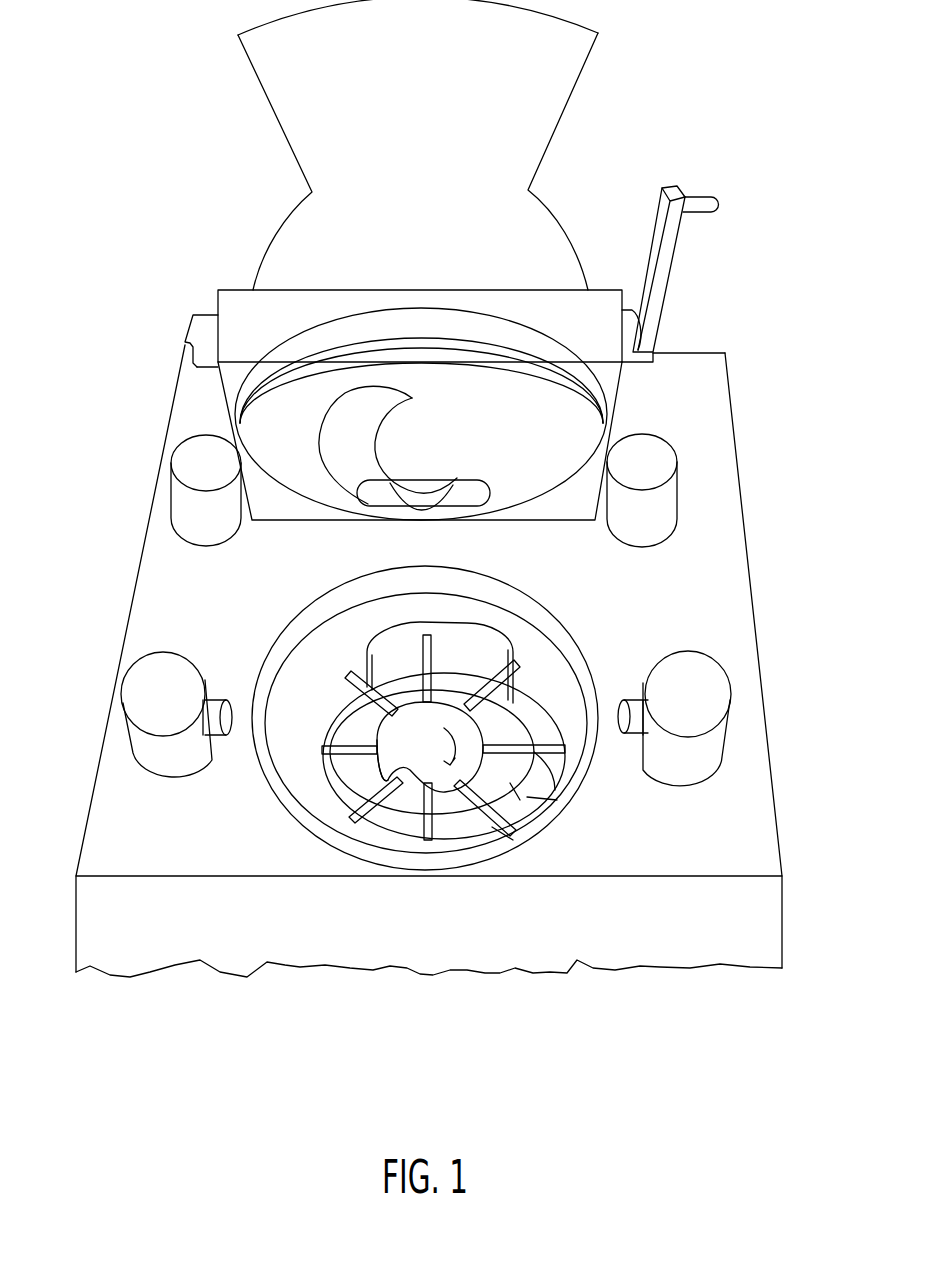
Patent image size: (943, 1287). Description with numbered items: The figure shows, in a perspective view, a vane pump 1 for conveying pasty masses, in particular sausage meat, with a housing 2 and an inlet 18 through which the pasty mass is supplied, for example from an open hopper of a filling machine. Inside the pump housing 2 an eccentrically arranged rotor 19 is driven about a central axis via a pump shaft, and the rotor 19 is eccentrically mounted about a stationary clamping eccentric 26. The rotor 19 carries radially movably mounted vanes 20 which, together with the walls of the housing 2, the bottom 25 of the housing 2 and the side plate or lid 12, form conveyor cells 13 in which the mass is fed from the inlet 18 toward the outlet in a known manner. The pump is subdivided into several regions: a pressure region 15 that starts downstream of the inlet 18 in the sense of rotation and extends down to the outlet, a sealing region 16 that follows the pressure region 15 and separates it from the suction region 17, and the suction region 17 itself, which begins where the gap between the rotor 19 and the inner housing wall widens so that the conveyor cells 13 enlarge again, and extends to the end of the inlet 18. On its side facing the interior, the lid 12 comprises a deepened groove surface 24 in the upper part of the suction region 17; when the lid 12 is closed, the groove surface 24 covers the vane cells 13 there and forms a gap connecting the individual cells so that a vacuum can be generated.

The vane pump 1 is at (800, 659).
The housing 2 is at (305, 688).
The lid 12 is at (555, 418).
The conveyor cells 13 is at (537, 708).
The pressure region 15 is at (592, 712).
The sealing region 16 is at (420, 817).
The suction region 17 is at (400, 760).
The inlet 18 is at (478, 643).
The rotor 19 is at (502, 788).
The vanes 20 is at (370, 820).
The groove surface 24 is at (350, 455).
The bottom 25 is at (553, 790).
The clamping eccentric 26 is at (393, 752).